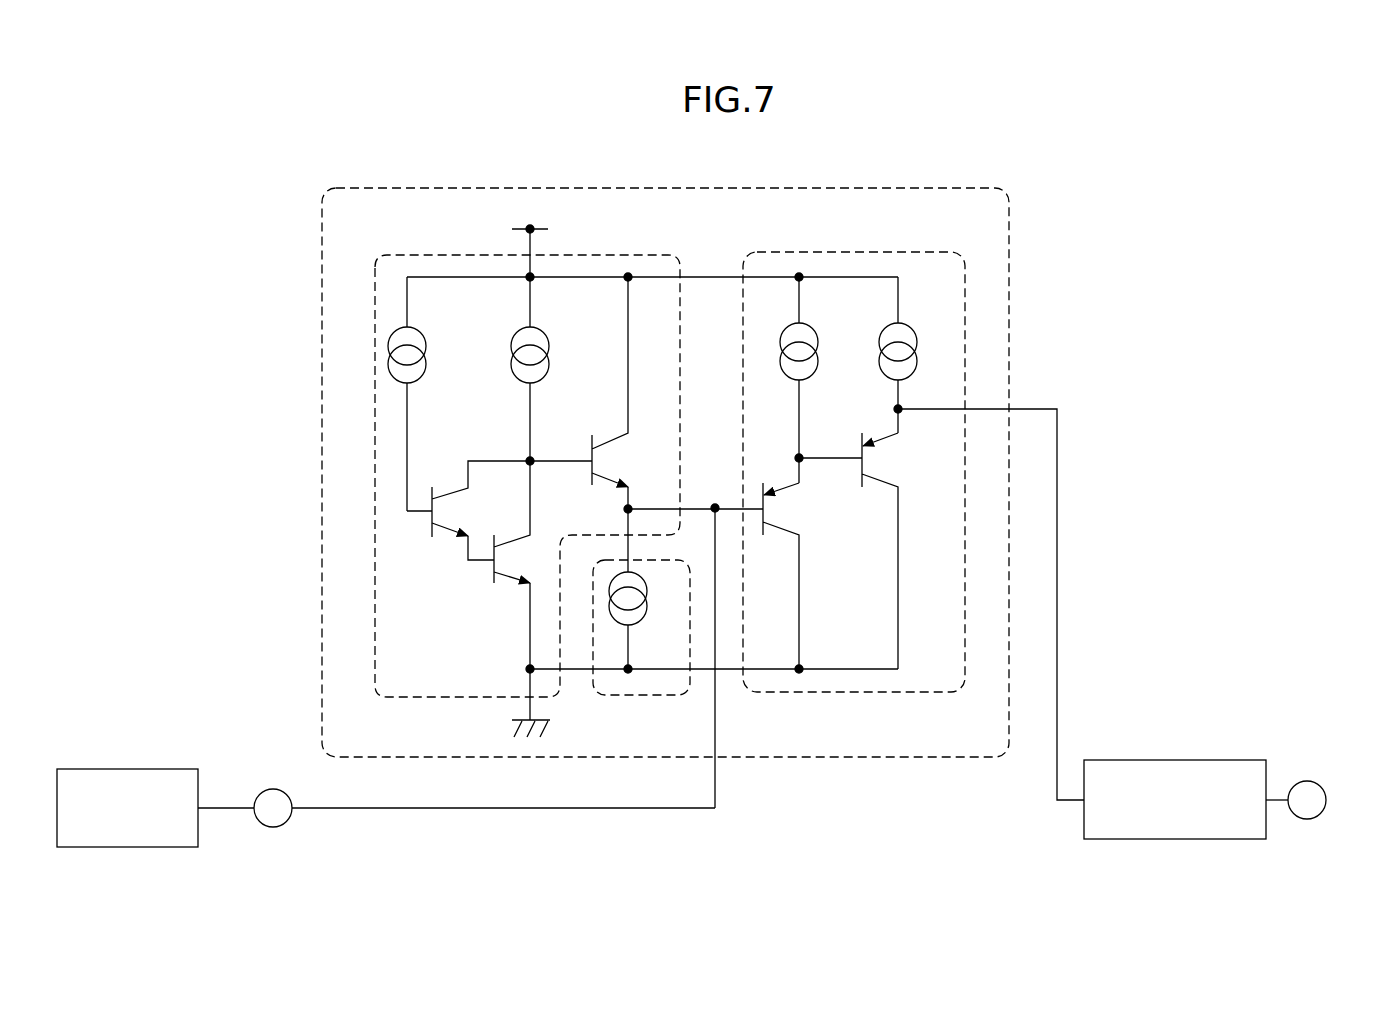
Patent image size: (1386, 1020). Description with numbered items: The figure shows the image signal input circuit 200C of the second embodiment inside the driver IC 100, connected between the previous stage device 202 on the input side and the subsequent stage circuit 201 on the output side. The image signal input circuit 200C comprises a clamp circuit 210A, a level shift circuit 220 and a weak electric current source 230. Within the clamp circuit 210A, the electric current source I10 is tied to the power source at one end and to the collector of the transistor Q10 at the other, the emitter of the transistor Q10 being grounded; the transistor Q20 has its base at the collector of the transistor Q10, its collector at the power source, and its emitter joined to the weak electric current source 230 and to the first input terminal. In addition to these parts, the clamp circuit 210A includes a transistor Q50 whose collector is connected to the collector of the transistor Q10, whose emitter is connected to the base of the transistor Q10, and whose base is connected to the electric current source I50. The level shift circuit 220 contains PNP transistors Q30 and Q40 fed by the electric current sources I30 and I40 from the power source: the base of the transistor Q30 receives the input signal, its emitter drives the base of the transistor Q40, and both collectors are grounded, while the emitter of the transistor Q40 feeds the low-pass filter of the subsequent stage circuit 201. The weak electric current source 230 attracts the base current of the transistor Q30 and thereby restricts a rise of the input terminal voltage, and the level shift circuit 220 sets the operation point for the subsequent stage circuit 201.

The driver IC 100 is at (1098, 159).
The image signal input circuit 200C is at (935, 190).
The clamp circuit 210A is at (600, 250).
The level shift circuit 220 is at (885, 251).
The weak electric current source 230 is at (652, 697).
The subsequent stage circuit 201 is at (1170, 760).
The previous stage device 202 is at (138, 769).
The transistor Q10 is at (504, 565).
The transistor Q20 is at (602, 393).
The transistor Q30 is at (805, 563).
The transistor Q40 is at (872, 539).
The transistor Q50 is at (468, 512).
The electric current source I10 is at (549, 369).
The electric current source I30 is at (819, 367).
The electric current source I40 is at (917, 343).
The electric current source I50 is at (427, 394).